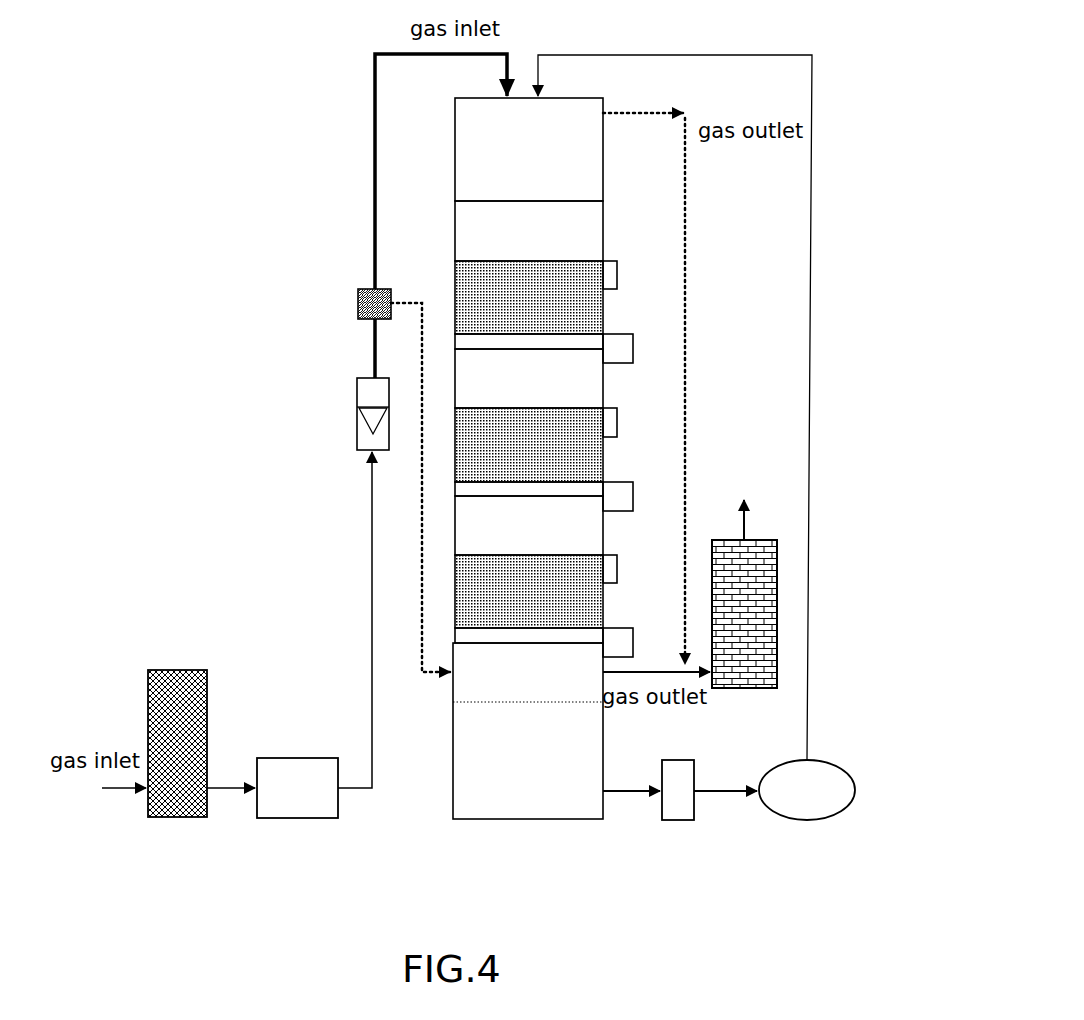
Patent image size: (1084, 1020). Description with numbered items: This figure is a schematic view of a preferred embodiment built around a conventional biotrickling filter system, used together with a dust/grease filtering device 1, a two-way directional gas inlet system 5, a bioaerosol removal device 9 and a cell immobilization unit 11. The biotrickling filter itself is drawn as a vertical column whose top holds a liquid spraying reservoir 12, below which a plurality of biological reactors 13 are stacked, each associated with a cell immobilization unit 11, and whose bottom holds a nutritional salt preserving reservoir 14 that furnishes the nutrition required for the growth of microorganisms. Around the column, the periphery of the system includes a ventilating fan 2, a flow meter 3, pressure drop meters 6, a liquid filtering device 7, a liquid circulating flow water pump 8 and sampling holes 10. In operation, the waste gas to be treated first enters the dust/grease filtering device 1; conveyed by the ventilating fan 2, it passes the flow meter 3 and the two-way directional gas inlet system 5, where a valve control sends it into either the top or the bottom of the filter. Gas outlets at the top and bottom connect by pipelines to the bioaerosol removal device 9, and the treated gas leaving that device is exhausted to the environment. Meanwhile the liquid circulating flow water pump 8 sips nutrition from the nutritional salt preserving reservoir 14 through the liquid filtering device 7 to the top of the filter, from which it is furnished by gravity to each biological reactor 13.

The dust/grease filtering device 1 is at (184, 704).
The ventilating fan 2 is at (303, 794).
The flow meter 3 is at (354, 432).
The two-way directional gas inlet system 5 is at (355, 308).
The pressure drop meters 6 is at (637, 348).
The liquid filtering device 7 is at (684, 794).
The liquid circulating flow water pump 8 is at (813, 801).
The bioaerosol removal device 9 is at (744, 594).
The sampling holes 10 is at (621, 275).
The cell immobilization unit 11 is at (540, 314).
The liquid spraying reservoir 12 is at (540, 176).
The biological reactors 13 is at (540, 247).
The nutritional salt preserving reservoir 14 is at (544, 779).